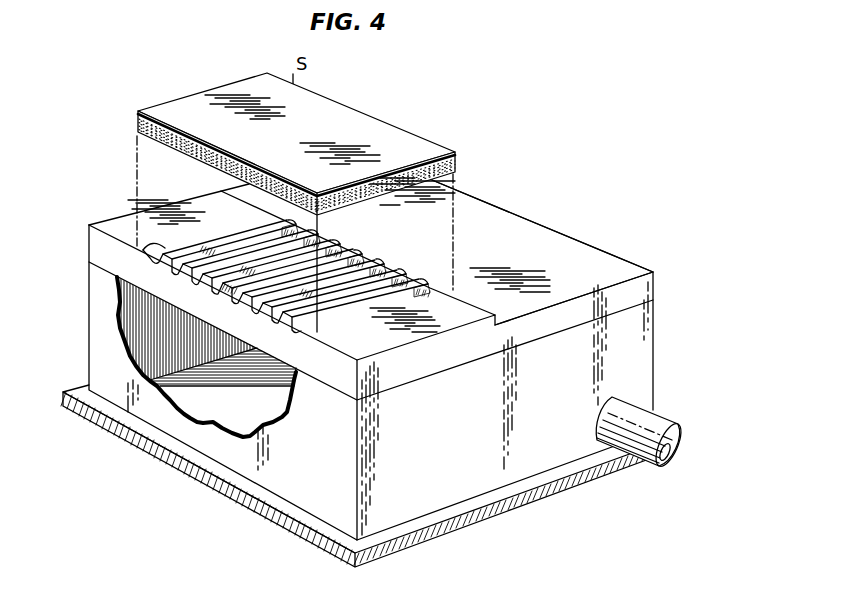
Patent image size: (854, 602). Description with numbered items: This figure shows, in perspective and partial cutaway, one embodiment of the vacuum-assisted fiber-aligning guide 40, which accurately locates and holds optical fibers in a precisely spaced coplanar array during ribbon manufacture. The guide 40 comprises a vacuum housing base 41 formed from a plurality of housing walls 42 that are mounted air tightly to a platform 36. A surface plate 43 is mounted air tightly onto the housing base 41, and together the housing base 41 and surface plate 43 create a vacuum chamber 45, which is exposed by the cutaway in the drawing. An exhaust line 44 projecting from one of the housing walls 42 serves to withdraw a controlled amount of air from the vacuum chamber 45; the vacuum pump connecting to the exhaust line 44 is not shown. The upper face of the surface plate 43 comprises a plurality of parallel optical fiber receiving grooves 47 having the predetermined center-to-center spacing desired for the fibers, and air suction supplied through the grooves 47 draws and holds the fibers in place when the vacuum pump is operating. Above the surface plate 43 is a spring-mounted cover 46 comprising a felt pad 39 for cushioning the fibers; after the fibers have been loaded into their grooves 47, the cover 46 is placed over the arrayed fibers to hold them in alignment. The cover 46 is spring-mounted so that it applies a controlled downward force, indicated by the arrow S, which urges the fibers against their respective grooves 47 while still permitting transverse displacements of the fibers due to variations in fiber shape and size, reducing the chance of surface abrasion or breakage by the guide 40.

The platform 36 is at (505, 503).
The felt pad 39 is at (138, 128).
The vacuum-assisted fiber-aligning guide 40 is at (160, 462).
The vacuum housing base 41 is at (297, 537).
The housing walls 42 is at (625, 352).
The surface plate 43 is at (583, 262).
The exhaust line 44 is at (657, 428).
The vacuum chamber 45 is at (143, 313).
The spring-mounted cover 46 is at (377, 133).
The optical fiber receiving grooves 47 is at (337, 252).